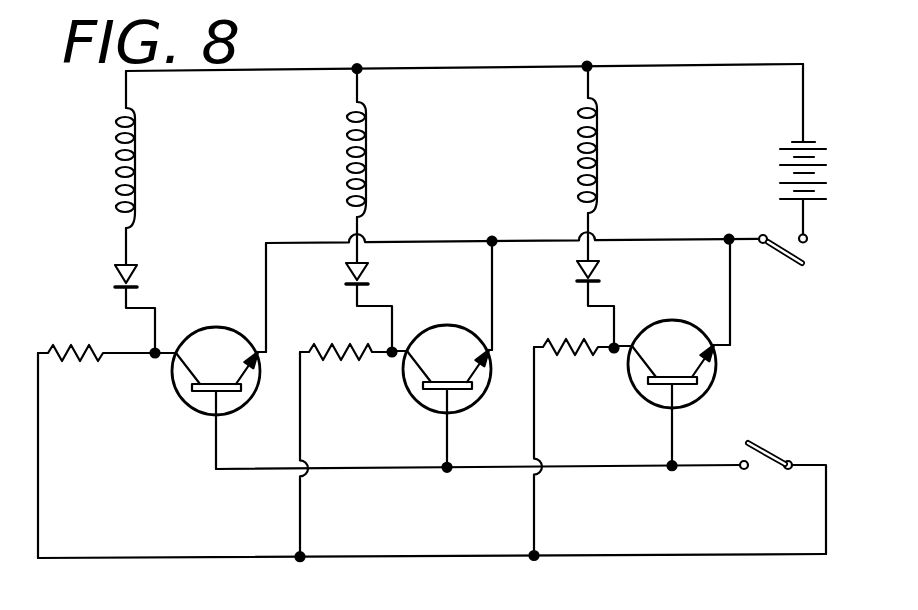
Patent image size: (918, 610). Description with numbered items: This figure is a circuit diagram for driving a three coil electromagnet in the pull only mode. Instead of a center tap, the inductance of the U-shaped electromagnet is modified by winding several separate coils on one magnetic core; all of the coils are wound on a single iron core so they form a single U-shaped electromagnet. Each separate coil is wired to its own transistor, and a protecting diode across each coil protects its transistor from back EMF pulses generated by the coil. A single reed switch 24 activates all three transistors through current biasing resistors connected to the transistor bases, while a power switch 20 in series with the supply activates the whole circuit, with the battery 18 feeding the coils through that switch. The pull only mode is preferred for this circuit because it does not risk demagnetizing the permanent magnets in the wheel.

The battery 18 is at (826, 176).
The power switch 20 is at (802, 260).
The reed switch 24 is at (755, 441).